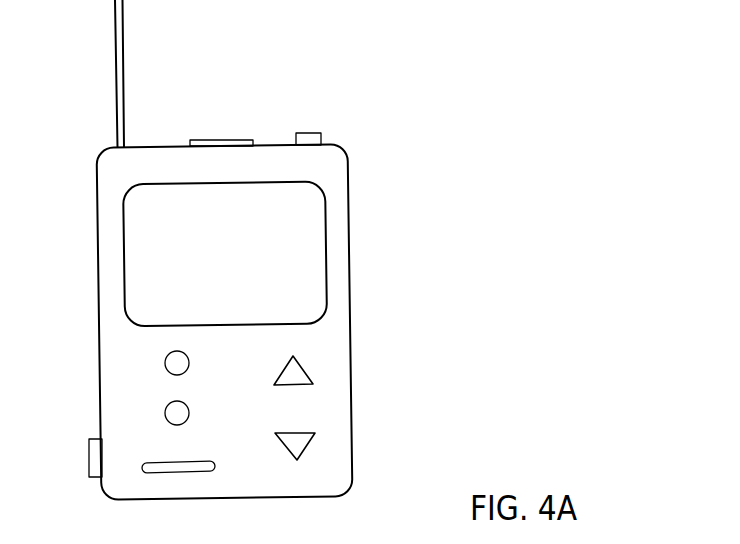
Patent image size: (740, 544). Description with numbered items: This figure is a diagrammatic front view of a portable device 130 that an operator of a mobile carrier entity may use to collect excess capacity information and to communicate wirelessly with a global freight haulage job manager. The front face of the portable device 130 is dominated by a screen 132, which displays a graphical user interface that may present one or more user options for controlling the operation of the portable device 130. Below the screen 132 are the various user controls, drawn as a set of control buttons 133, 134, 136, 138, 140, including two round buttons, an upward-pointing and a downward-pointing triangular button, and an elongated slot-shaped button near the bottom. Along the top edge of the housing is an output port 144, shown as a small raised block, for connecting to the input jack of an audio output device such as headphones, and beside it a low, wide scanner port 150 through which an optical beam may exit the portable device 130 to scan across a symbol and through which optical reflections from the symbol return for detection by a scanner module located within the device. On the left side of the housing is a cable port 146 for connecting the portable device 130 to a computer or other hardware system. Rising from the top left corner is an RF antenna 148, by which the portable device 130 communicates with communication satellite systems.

The portable device 130 is at (464, 171).
The screen 132 is at (244, 264).
The control button 133 is at (213, 468).
The control button 134 is at (165, 359).
The control button 136 is at (189, 411).
The control button 138 is at (282, 368).
The control button 140 is at (290, 430).
The output port 144 is at (310, 130).
The cable port 146 is at (88, 458).
The RF antenna 148 is at (125, 72).
The scanner port 150 is at (222, 140).